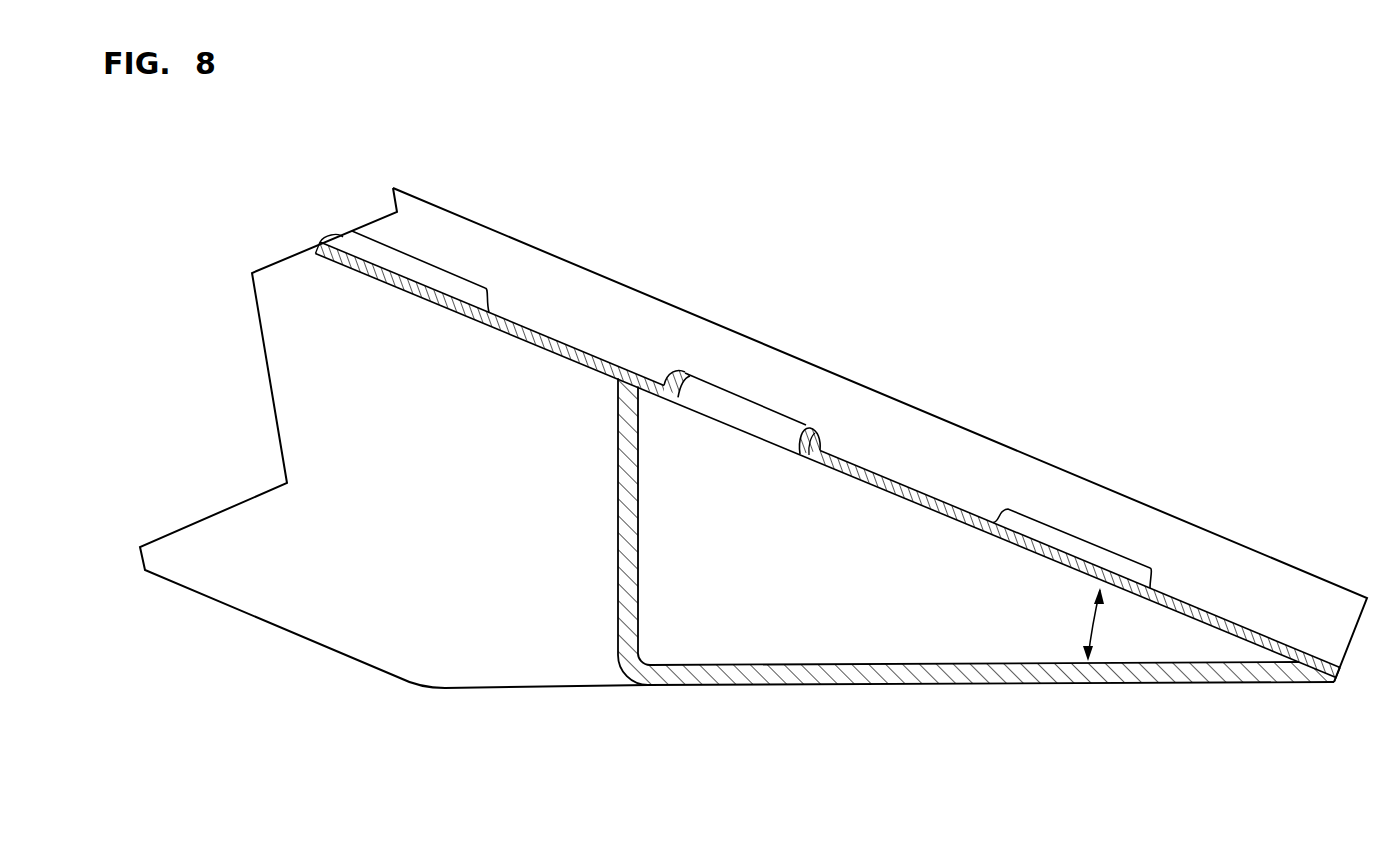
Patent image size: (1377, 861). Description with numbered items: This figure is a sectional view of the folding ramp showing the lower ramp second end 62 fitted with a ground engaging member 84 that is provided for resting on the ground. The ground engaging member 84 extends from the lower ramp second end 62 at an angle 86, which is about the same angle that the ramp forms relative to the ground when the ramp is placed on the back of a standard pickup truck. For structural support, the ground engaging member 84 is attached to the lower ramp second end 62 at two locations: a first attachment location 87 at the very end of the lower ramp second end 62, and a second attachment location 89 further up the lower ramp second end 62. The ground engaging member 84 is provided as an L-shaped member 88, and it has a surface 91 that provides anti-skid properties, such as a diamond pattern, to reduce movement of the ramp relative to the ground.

The lower ramp second end 62 is at (955, 448).
The ground engaging member 84 is at (1073, 672).
The angle 86 is at (1088, 620).
The first attachment location 87 is at (1320, 681).
The L-shaped member 88 is at (667, 677).
The second attachment location 89 is at (617, 384).
The surface 91 is at (920, 683).